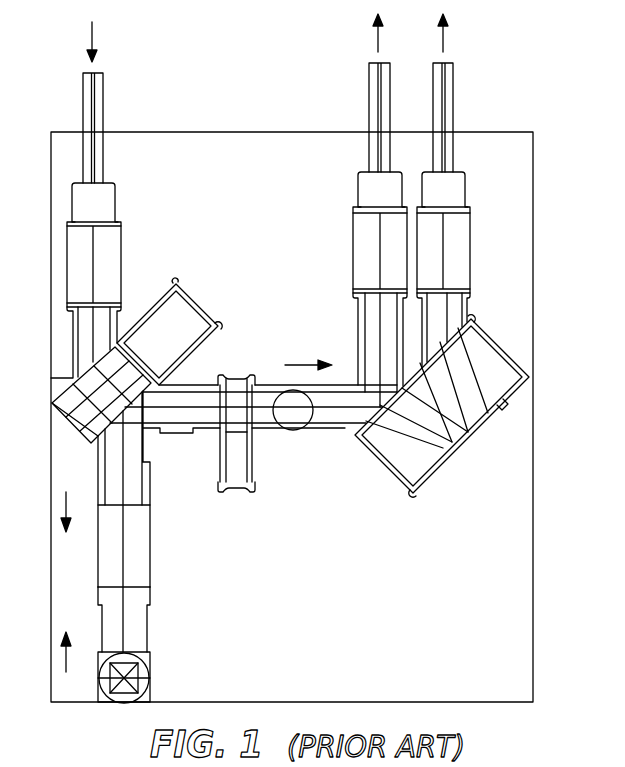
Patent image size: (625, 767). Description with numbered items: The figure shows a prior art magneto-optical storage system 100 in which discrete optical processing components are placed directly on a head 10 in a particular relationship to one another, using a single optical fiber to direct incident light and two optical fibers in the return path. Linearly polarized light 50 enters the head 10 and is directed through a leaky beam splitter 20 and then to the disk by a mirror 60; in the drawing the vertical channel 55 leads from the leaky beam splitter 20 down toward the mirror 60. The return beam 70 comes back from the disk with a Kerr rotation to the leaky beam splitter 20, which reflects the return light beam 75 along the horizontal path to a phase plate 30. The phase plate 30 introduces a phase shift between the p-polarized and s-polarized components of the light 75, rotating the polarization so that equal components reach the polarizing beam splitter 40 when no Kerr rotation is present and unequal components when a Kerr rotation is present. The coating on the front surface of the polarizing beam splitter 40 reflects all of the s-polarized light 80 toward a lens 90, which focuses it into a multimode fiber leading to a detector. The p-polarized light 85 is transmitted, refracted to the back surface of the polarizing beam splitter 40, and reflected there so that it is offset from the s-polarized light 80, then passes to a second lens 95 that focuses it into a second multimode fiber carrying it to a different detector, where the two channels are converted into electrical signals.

The head 10 is at (535, 588).
The leaky beam splitter 20 is at (188, 316).
The phase plate 30 is at (245, 468).
The polarizing beam splitter 40 is at (495, 357).
The linearly polarized light 50 is at (82, 113).
The vertical flow channel 55 is at (120, 463).
The mirror 60 is at (98, 693).
The return beam 70 is at (123, 609).
The return light beam 75 is at (205, 398).
The s-polarized light 80 is at (382, 315).
The p-polarized light 85 is at (447, 312).
The lens 90 is at (353, 256).
The second lens 95 is at (473, 250).
The MO storage system 100 is at (522, 105).